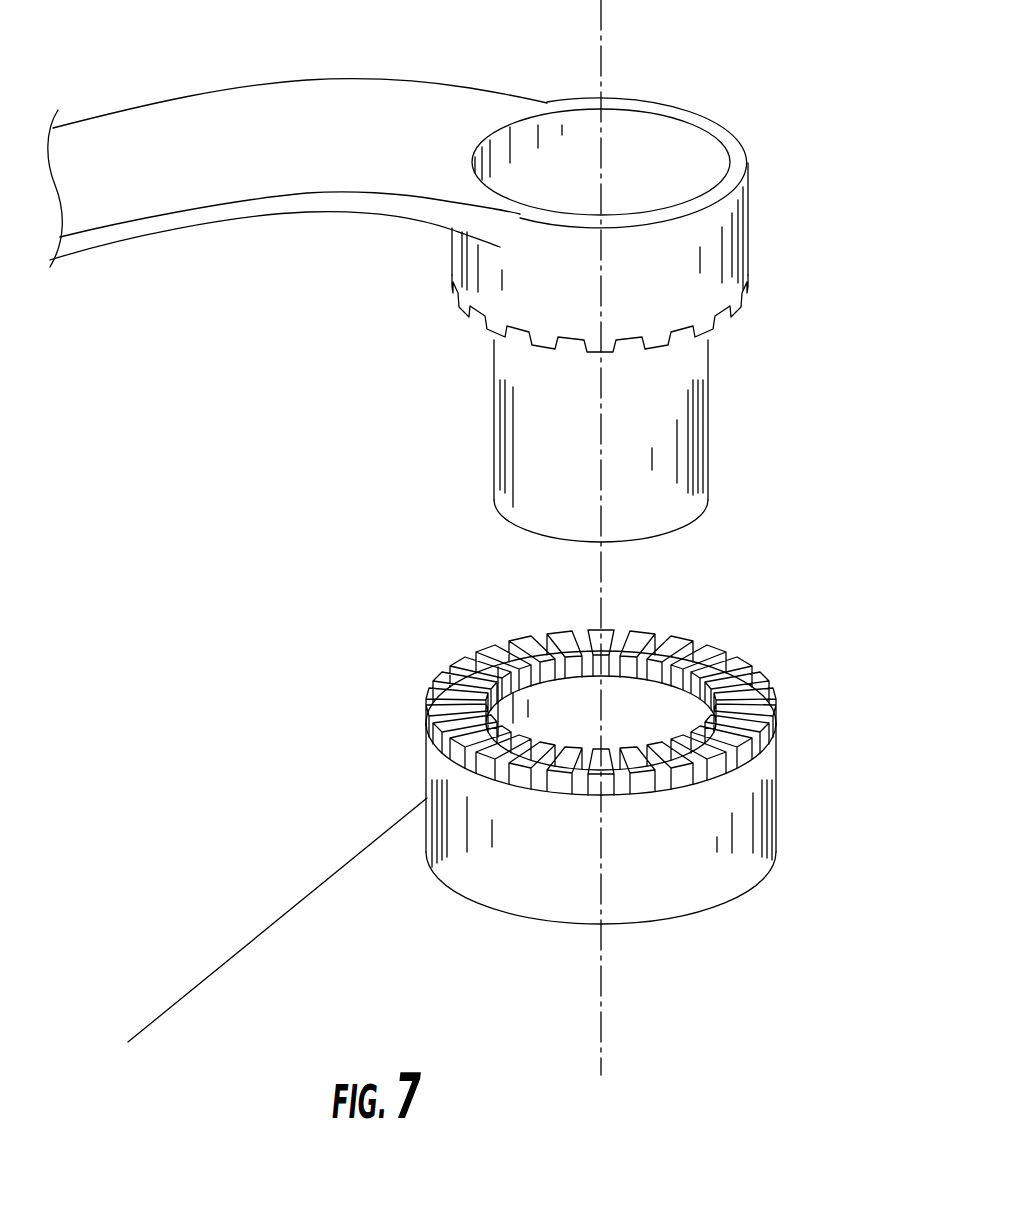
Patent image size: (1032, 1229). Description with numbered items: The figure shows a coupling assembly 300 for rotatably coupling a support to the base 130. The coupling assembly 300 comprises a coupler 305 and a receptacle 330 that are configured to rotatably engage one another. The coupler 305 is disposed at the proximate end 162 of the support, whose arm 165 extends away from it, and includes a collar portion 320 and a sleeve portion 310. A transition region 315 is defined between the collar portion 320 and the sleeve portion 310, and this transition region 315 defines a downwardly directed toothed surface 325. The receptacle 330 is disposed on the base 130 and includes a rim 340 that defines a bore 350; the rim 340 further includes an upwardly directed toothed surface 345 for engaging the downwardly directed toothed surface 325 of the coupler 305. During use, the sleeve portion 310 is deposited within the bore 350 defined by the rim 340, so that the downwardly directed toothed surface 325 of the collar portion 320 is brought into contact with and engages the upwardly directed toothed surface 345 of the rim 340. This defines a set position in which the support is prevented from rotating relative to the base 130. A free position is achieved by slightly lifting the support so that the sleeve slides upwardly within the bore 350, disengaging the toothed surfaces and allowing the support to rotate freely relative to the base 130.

The base 130 is at (313, 933).
The proximate end 162 is at (630, 80).
The arm 165 is at (337, 95).
The coupling assembly 300 is at (222, 698).
The coupler 305 is at (590, 271).
The sleeve portion 310 is at (682, 440).
The transition region 315 is at (606, 441).
The collar portion 320 is at (730, 250).
The downwardly directed toothed surface 325 is at (462, 318).
The receptacle 330 is at (621, 748).
The rim 340 is at (740, 833).
The upwardly directed toothed surface 345 is at (783, 683).
The bore 350 is at (522, 712).